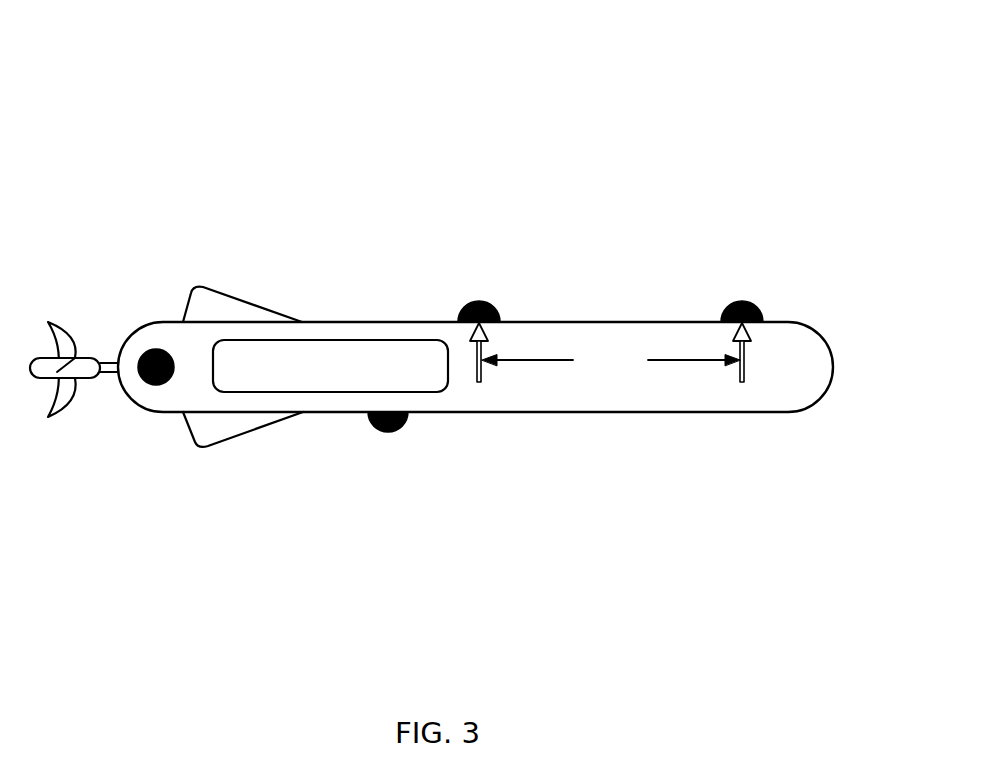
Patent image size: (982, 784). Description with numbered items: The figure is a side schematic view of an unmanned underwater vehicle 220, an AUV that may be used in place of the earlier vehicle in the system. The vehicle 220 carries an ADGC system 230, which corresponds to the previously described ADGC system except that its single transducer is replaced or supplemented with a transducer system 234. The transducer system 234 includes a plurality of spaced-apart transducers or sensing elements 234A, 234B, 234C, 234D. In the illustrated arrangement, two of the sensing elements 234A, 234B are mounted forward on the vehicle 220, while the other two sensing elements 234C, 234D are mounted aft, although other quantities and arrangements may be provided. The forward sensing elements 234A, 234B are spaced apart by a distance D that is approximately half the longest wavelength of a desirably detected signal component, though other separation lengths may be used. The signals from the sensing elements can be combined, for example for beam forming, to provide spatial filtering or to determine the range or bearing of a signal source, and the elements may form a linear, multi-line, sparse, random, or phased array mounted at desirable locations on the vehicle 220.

The unmanned underwater vehicle 220 is at (217, 100).
The ADGC system 230 is at (267, 340).
The transducer system 234 is at (450, 329).
The sensing element 234A is at (479, 300).
The sensing element 234B is at (742, 300).
The sensing element 234C is at (388, 432).
The sensing element 234D is at (156, 347).
The distance D is at (608, 382).